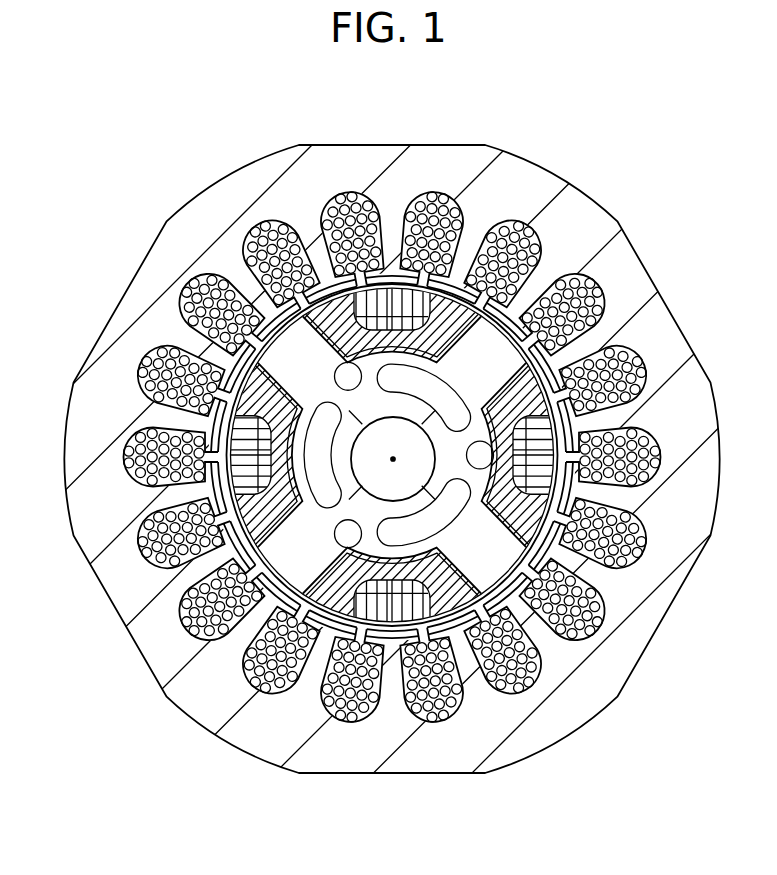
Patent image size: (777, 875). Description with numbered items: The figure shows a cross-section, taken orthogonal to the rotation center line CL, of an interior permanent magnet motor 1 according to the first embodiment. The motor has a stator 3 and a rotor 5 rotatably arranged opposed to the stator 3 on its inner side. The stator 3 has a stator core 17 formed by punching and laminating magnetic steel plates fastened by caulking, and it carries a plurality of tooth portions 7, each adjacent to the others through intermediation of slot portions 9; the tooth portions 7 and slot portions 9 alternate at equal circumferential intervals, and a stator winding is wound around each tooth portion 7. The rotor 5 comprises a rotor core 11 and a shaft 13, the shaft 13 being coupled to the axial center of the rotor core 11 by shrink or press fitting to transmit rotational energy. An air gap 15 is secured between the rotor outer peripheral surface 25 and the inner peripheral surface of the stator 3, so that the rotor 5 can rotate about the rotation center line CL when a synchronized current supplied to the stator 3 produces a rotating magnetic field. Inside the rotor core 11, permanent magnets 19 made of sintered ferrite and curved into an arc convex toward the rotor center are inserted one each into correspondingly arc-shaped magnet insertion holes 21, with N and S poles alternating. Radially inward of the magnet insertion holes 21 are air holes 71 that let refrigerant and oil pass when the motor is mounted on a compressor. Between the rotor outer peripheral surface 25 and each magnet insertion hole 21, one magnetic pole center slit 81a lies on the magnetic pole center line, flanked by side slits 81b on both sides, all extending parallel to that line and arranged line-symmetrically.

The interior permanent magnet motor 1 is at (46, 109).
The stator 3 is at (320, 162).
The rotor 5 is at (594, 441).
The tooth portions 7 is at (215, 357).
The slot portions 9 is at (213, 280).
The rotor core 11 is at (645, 367).
The shaft 13 is at (182, 621).
The air gap 15 is at (122, 426).
The stator core 17 is at (540, 195).
The permanent magnets 19 is at (500, 462).
The magnet insertion holes 21 is at (388, 456).
The rotor outer peripheral surface 25 is at (560, 667).
The air holes 71 is at (415, 535).
The magnetic pole center slit 81a is at (382, 212).
The side slits 81b is at (429, 212).
The rotation center line CL is at (393, 459).